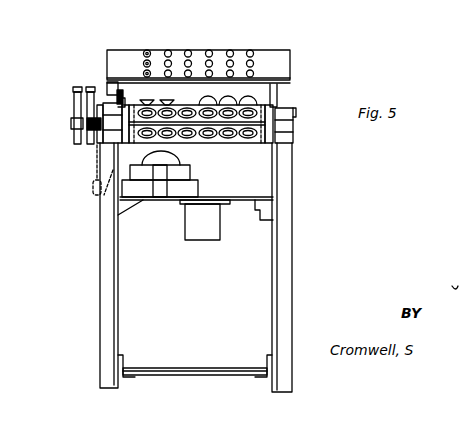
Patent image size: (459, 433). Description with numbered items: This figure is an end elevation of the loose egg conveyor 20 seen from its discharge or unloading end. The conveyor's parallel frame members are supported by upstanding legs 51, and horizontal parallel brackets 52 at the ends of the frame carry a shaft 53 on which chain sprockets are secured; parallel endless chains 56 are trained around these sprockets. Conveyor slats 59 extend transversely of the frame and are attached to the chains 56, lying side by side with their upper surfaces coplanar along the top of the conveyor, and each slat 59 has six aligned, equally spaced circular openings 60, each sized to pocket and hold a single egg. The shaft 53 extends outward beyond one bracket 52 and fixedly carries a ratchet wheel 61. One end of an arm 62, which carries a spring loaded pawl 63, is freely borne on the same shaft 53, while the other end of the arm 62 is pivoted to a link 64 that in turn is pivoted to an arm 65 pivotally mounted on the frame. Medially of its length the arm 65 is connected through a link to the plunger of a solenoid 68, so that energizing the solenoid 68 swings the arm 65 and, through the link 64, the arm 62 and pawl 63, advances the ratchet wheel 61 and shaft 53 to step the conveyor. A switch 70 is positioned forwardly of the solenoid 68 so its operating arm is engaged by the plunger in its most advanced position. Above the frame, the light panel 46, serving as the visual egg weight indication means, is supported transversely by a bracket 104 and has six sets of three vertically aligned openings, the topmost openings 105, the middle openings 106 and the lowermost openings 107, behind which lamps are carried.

The loose egg conveyor 20 is at (303, 108).
The light panel 46 is at (290, 50).
The upstanding legs 51 is at (284, 288).
The brackets 52 is at (108, 100).
The shaft 53 is at (96, 160).
The endless chains 56 is at (103, 196).
The conveyor slats 59 is at (198, 143).
The circular openings 60 is at (247, 143).
The ratchet wheel 61 is at (88, 138).
The arm 62 is at (73, 103).
The spring loaded pawl 63 is at (73, 91).
The link 64 is at (71, 124).
The arm 65 is at (92, 184).
The solenoid 68 is at (127, 203).
The switch 70 is at (160, 186).
The bracket 104 is at (107, 72).
The topmost openings 105 is at (148, 51).
The middle openings 106 is at (151, 62).
The lowermost openings 107 is at (145, 72).